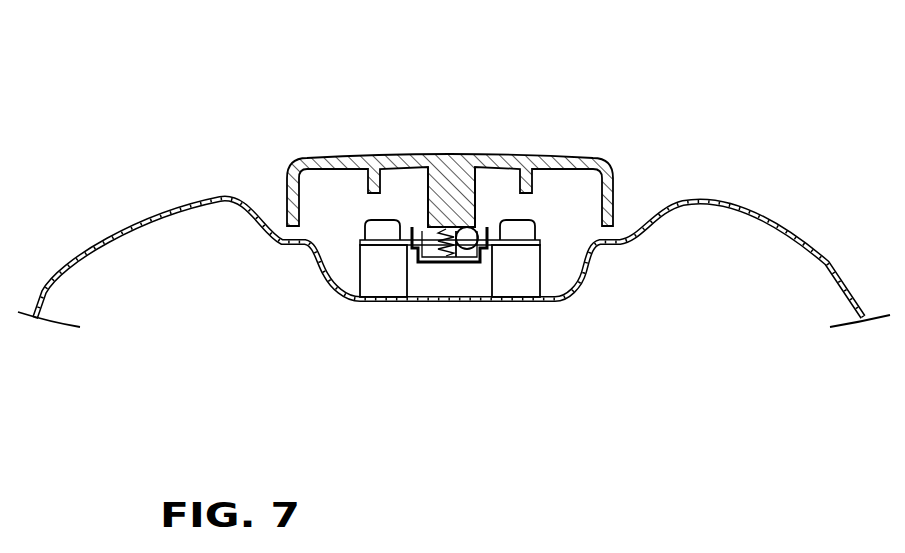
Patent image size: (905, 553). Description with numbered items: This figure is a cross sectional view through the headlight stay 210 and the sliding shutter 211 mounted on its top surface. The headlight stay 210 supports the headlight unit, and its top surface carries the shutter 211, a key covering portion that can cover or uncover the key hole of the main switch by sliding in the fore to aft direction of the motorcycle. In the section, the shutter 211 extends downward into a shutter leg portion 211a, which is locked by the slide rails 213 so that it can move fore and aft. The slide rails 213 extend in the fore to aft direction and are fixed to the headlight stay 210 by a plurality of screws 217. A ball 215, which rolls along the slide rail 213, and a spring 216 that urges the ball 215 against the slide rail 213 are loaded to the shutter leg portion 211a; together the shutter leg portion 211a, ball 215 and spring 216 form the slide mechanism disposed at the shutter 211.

The headlight stay 210 is at (826, 256).
The shutter 211 is at (510, 153).
The shutter leg portion 211a is at (453, 155).
The slide rails 213 is at (379, 283).
The ball 215 is at (468, 250).
The spring 216 is at (446, 262).
The screws 217 is at (365, 232).